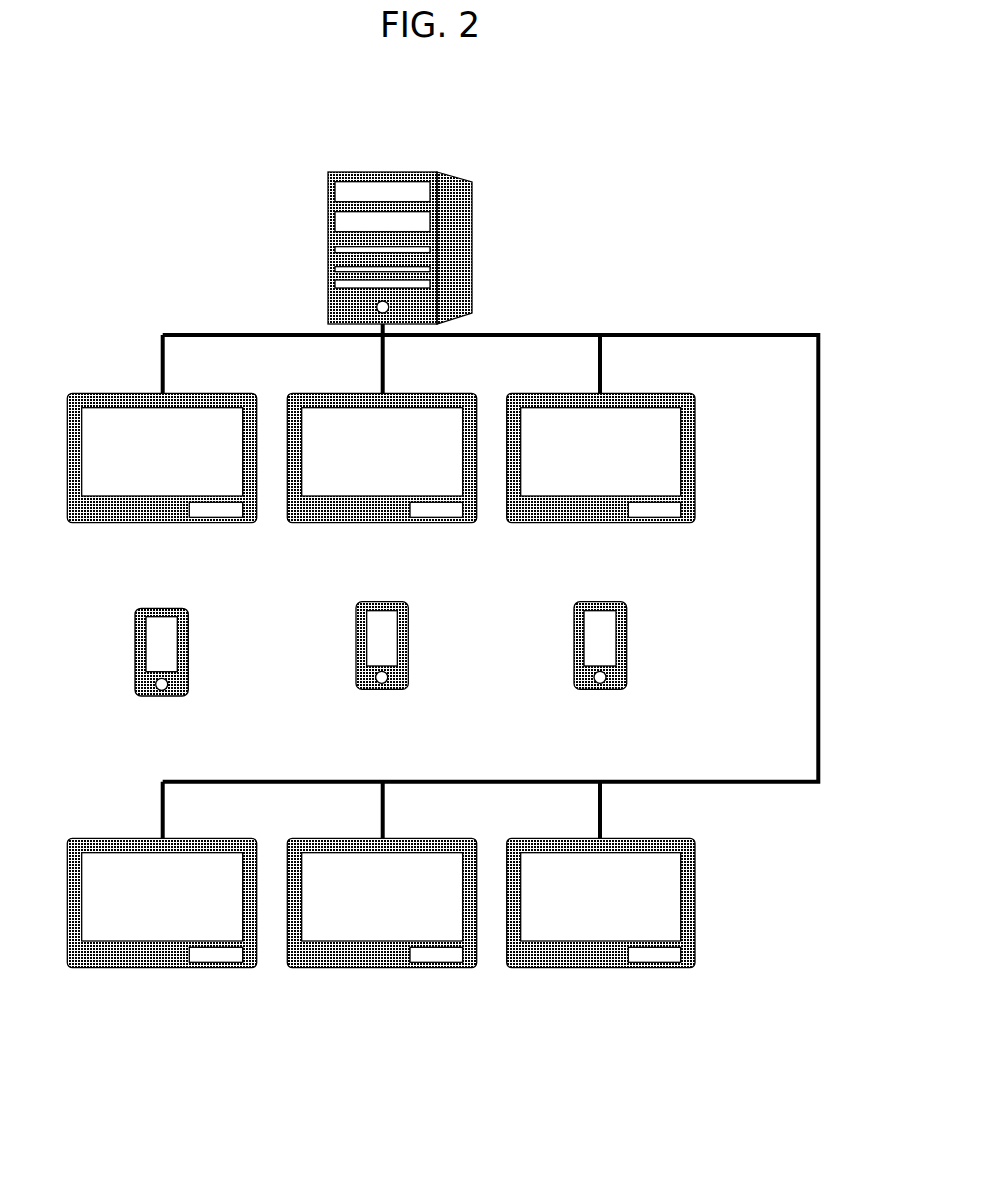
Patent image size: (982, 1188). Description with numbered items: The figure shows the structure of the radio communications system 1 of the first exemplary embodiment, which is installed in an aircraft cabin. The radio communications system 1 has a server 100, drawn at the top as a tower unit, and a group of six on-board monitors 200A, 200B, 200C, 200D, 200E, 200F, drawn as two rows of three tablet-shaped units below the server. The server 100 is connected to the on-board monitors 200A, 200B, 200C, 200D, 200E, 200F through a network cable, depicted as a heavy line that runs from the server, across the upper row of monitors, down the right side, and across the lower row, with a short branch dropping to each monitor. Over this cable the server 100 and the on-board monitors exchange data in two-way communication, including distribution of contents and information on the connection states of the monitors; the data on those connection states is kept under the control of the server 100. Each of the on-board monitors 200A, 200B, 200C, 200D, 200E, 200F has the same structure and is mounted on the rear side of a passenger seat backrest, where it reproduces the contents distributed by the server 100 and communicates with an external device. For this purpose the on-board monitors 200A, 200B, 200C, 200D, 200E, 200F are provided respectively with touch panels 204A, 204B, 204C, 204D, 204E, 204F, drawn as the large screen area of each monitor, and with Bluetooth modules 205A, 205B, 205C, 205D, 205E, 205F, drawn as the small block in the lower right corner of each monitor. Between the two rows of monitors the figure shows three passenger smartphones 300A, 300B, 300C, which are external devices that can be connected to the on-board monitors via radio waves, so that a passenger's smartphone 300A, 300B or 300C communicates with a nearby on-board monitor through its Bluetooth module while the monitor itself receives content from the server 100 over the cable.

The radio communications system 1 is at (655, 236).
The server 100 is at (328, 209).
The on-board monitor 200A is at (113, 523).
The on-board monitor 200B is at (345, 523).
The on-board monitor 200C is at (577, 523).
The on-board monitor 200D is at (122, 969).
The on-board monitor 200E is at (345, 969).
The on-board monitor 200F is at (577, 969).
The touch panel 204A is at (127, 426).
The touch panel 204B is at (355, 429).
The touch panel 204C is at (562, 429).
The touch panel 204D is at (127, 868).
The touch panel 204E is at (355, 872).
The touch panel 204F is at (572, 875).
The Bluetooth module 205A is at (223, 510).
The Bluetooth module 205B is at (443, 510).
The Bluetooth module 205C is at (663, 510).
The Bluetooth module 205D is at (223, 957).
The Bluetooth module 205E is at (443, 957).
The Bluetooth module 205F is at (663, 957).
The smartphone 300A is at (152, 660).
The smartphone 300B is at (376, 658).
The smartphone 300C is at (595, 658).